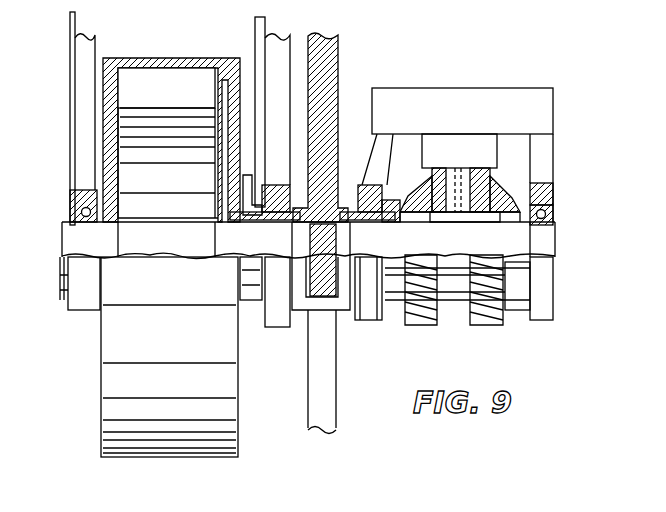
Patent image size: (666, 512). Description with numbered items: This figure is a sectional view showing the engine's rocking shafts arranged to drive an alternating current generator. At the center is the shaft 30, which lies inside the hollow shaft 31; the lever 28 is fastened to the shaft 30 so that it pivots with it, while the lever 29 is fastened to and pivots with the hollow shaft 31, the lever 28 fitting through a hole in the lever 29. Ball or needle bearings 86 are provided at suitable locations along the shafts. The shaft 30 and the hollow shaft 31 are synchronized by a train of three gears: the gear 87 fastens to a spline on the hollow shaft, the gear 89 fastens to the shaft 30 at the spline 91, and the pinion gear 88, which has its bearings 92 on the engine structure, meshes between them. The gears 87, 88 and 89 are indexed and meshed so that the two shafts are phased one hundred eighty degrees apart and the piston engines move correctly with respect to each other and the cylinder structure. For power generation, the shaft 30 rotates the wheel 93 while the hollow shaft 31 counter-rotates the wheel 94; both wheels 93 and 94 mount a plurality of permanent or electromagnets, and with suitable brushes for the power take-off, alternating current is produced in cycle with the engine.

The lever 28 is at (310, 241).
The lever 29 is at (362, 146).
The shaft 30 is at (548, 243).
The hollow shaft 31 is at (394, 226).
The ball or needle bearings 86 is at (80, 226).
The gear 87 is at (425, 323).
The pinion gear 88 is at (488, 200).
The gear 89 is at (488, 323).
The spline 91 is at (500, 228).
The bearings 92 is at (471, 160).
The wheel 93 is at (160, 108).
The wheel 94 is at (200, 75).